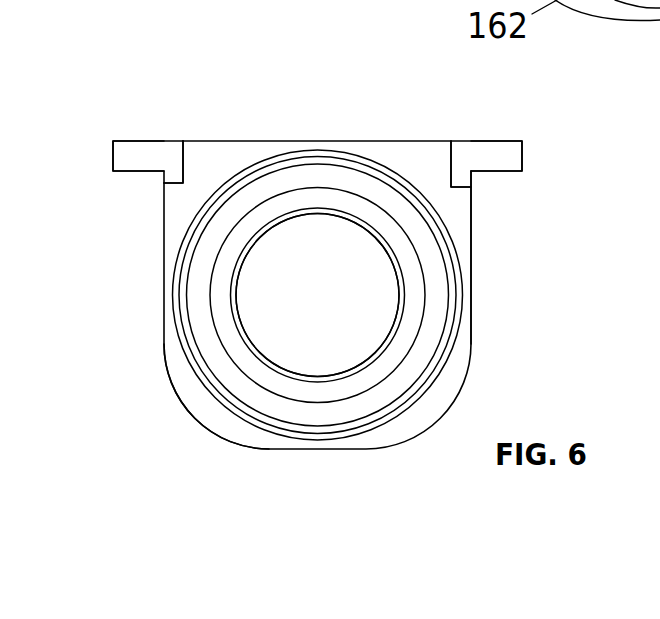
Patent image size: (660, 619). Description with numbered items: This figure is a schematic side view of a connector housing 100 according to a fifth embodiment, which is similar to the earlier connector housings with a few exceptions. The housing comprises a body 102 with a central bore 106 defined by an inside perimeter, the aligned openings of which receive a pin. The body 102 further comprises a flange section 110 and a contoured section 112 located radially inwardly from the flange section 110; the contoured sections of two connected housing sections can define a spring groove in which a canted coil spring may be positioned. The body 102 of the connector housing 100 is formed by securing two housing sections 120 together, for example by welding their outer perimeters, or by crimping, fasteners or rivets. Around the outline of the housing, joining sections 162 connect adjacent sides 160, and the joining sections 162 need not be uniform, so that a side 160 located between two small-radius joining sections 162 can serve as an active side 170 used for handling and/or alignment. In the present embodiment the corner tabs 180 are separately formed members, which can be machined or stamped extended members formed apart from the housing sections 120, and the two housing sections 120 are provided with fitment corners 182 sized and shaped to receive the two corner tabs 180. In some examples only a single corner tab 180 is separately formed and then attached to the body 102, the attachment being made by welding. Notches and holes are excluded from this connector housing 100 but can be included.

The connector housing 100 is at (163, 337).
The body 102 is at (412, 422).
The bore 106 is at (343, 307).
The flange section 110 is at (455, 373).
The contoured section 112 is at (347, 413).
The housing sections 120 is at (433, 288).
The side 160 is at (478, 213).
The joining section 162 is at (190, 427).
The active side 170 is at (307, 142).
The corner tab 180 is at (142, 155).
The fitment corner 182 is at (180, 158).